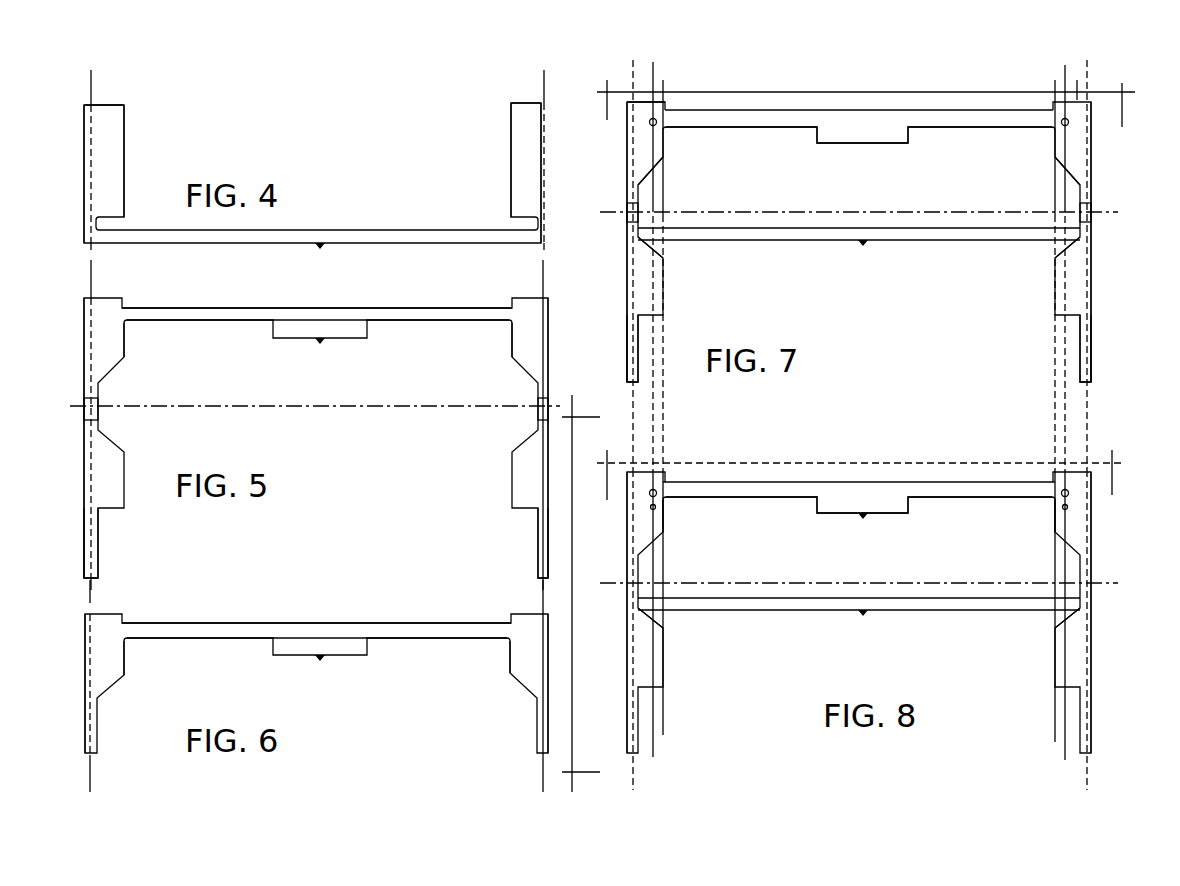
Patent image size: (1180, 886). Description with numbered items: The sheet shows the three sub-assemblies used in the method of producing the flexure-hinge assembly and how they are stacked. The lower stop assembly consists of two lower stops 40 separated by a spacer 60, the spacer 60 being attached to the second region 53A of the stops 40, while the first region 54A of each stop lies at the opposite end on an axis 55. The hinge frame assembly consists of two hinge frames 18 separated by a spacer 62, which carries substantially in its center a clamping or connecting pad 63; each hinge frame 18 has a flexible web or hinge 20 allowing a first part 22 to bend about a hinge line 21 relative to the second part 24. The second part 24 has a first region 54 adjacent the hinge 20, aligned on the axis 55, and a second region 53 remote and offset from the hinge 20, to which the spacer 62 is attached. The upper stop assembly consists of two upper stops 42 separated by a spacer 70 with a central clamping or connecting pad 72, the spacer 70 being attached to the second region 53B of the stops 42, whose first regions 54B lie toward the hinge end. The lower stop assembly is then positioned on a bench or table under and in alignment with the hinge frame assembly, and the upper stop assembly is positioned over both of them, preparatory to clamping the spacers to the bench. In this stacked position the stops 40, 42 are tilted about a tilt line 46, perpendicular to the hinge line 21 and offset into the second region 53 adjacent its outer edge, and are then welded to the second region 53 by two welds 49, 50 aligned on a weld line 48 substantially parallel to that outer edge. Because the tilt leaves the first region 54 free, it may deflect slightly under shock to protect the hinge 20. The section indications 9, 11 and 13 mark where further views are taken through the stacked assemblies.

In FIG. 5, the hinge frame 18 is at (126, 500).
In FIG. 7, the hinge frame 18 is at (660, 160).
In FIG. 5, the flexible web or hinge 20 is at (96, 406).
In FIG. 7, the flexible web or hinge 20 is at (627, 210).
In FIG. 5, the hinge line 21 is at (445, 406).
In FIG. 7, the hinge line 21 is at (830, 212).
In FIG. 5, the first part of the frame 22 is at (100, 561).
In FIG. 7, the first part of the frame 22 is at (627, 305).
In FIG. 7, the second part of the frame 24 is at (1078, 90).
In FIG. 4, the lower stop 40 is at (112, 180).
In FIG. 7, the lower stop 40 is at (660, 188).
In FIG. 6, the upper stop 42 is at (108, 660).
In FIG. 8, the upper stop 42 is at (660, 530).
In FIG. 7, the tilt line 46 is at (668, 84).
In FIG. 8, the tilt line 46 is at (665, 718).
In FIG. 7, the weld line 48 is at (656, 68).
In FIG. 8, the weld line 48 is at (653, 750).
In FIG. 7, the weld 49 is at (660, 126).
In FIG. 8, the weld 49 is at (658, 490).
In FIG. 8, the weld 50 is at (660, 512).
In FIG. 5, the second region of the second part 53 is at (116, 338).
In FIG. 7, the second region of the second part 53 is at (668, 142).
In FIG. 4, the second region of the lower stops 53A is at (115, 124).
In FIG. 7, the second region of the lower stops 53A is at (665, 172).
In FIG. 8, the second region of the lower stops 53A is at (660, 555).
In FIG. 6, the second region of the upper stops 53B is at (115, 650).
In FIG. 8, the second region of the upper stops 53B is at (660, 520).
In FIG. 5, the first region of the second part 54 is at (84, 325).
In FIG. 7, the first region of the second part 54 is at (627, 170).
In FIG. 4, the first region of the lower stops 54A is at (84, 119).
In FIG. 7, the first region of the lower stops 54A is at (627, 140).
In FIG. 6, the first region of the upper stops 54B is at (85, 633).
In FIG. 8, the first region of the upper stops 54B is at (635, 530).
In FIG. 4, the axis 55 is at (92, 84).
In FIG. 7, the axis 55 is at (630, 82).
In FIG. 8, the axis 55 is at (634, 765).
In FIG. 4, the spacer 60 is at (403, 235).
In FIG. 7, the spacer 60 is at (859, 237).
In FIG. 8, the spacer 60 is at (910, 605).
In FIG. 5, the spacer 62 is at (208, 307).
In FIG. 7, the spacer 62 is at (943, 120).
In FIG. 5, the clamping or connecting pad 63 is at (350, 318).
In FIG. 7, the clamping or connecting pad 63 is at (867, 130).
In FIG. 6, the spacer 70 is at (410, 632).
In FIG. 8, the spacer 70 is at (943, 490).
In FIG. 6, the clamping or connecting pad 72 is at (320, 632).
In FIG. 8, the clamping or connecting pad 72 is at (868, 500).
In FIG. 7, the section line 9- 9 is at (612, 156).
In FIG. 8, the section line 11- 11 is at (612, 533).
In FIG. 8, the section line 13- 13 is at (622, 434).